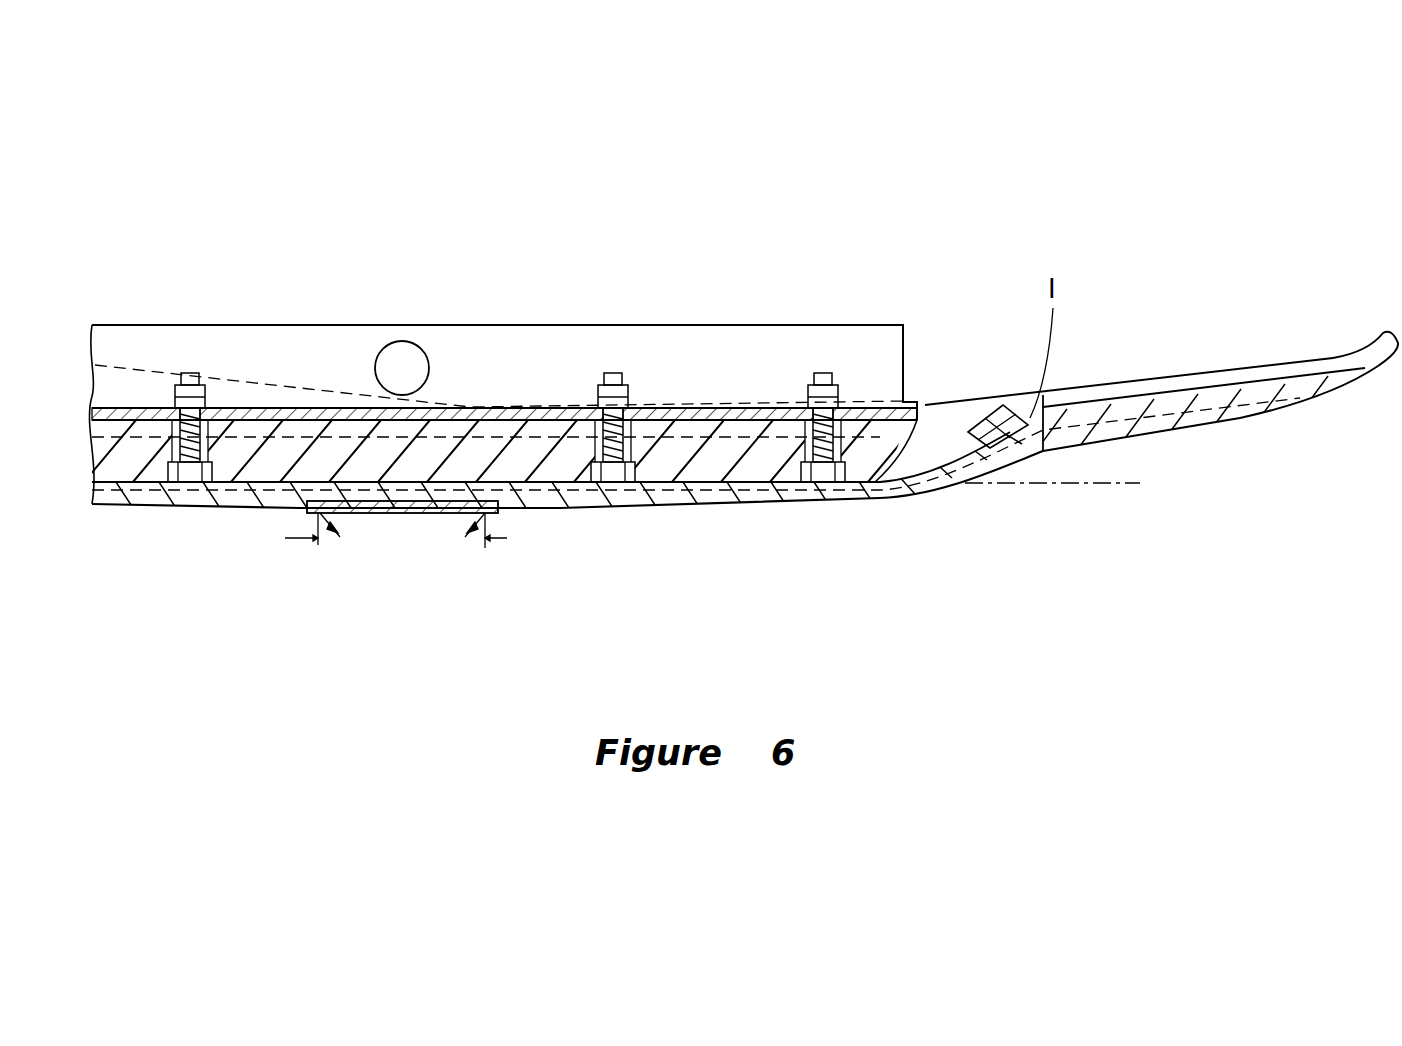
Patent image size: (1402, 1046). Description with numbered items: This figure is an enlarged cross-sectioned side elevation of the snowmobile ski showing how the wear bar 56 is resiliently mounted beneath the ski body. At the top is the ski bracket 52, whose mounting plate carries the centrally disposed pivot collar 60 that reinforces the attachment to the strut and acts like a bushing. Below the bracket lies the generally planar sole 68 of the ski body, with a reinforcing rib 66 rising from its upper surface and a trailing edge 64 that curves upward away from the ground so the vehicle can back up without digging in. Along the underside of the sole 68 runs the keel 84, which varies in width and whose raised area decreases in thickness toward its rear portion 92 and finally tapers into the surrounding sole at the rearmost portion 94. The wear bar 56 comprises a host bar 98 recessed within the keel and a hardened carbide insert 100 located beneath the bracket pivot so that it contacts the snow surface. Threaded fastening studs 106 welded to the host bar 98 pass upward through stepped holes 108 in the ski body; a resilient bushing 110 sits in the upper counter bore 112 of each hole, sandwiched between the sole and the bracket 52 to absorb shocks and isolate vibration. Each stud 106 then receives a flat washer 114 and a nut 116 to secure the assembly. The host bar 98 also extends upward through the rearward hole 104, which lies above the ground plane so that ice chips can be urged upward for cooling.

The ski bracket 52 is at (484, 325).
The wear bar 56 is at (690, 508).
The pivot collar 60 is at (378, 341).
The trailing edge 64 is at (1385, 327).
The reinforcing rib 66 is at (1183, 378).
The sole 68 is at (360, 470).
The keel 84 is at (1116, 440).
The rear portion of the keel 92 is at (718, 458).
The rearmost portion of the keel 94 is at (1230, 420).
The host bar 98 is at (578, 508).
The carbide insert 100 is at (415, 513).
The rearward hole 104 is at (1022, 450).
The threaded fastening stud 106 is at (181, 373).
The hole 108 is at (183, 482).
The resilient bushing 110 is at (150, 412).
The upper counter bore 112 is at (224, 482).
The flat washer 114 is at (212, 425).
The nut 116 is at (205, 392).